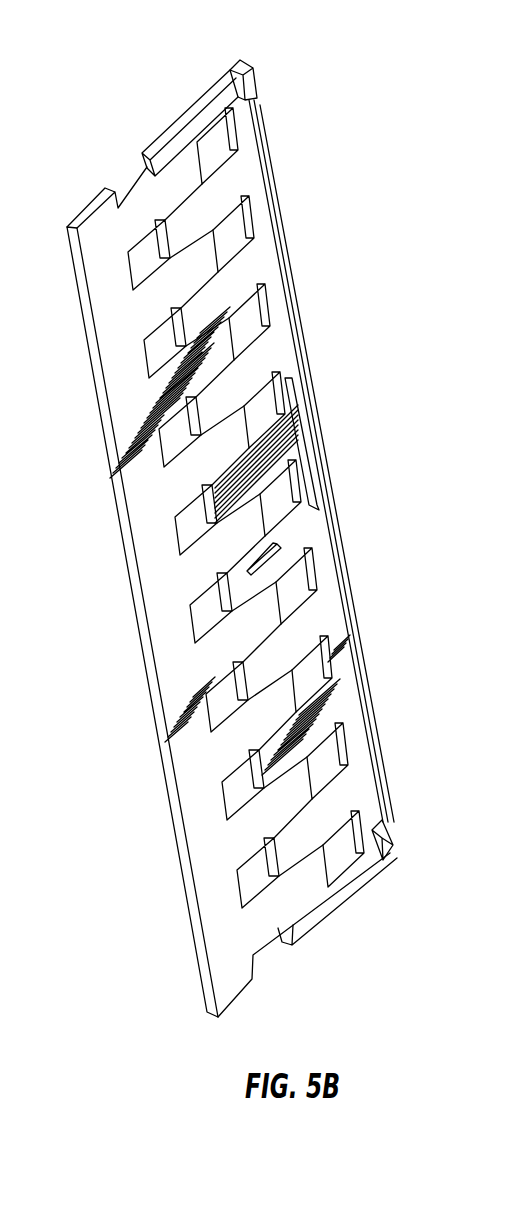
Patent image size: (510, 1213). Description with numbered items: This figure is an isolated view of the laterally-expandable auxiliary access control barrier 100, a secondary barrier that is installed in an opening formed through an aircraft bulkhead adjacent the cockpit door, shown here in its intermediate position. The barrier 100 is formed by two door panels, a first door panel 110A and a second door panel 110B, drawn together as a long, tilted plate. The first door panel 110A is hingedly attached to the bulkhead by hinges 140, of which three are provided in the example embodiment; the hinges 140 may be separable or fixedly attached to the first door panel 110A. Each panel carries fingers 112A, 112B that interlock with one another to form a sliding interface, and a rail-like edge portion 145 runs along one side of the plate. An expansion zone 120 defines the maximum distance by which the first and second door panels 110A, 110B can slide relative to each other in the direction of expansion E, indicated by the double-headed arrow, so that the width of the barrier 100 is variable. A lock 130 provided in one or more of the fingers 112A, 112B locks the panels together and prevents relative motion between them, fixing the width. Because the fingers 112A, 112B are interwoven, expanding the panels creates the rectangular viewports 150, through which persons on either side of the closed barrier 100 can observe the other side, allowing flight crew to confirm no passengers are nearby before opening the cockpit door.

The auxiliary access control barrier 100 is at (176, 60).
The first door panel 110A is at (265, 350).
The second door panel 110B is at (128, 371).
The fingers of the first door panel 112A is at (213, 510).
The fingers of the second door panel 112B is at (287, 787).
The expansion zone 120 is at (317, 937).
The lock 130 is at (280, 547).
The hinges 140 is at (240, 64).
The side rail 145 is at (280, 203).
The viewports 150 is at (244, 313).
The direction of expansion E is at (215, 67).